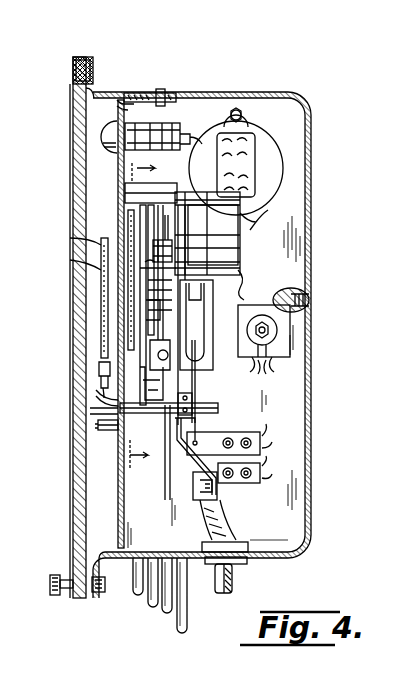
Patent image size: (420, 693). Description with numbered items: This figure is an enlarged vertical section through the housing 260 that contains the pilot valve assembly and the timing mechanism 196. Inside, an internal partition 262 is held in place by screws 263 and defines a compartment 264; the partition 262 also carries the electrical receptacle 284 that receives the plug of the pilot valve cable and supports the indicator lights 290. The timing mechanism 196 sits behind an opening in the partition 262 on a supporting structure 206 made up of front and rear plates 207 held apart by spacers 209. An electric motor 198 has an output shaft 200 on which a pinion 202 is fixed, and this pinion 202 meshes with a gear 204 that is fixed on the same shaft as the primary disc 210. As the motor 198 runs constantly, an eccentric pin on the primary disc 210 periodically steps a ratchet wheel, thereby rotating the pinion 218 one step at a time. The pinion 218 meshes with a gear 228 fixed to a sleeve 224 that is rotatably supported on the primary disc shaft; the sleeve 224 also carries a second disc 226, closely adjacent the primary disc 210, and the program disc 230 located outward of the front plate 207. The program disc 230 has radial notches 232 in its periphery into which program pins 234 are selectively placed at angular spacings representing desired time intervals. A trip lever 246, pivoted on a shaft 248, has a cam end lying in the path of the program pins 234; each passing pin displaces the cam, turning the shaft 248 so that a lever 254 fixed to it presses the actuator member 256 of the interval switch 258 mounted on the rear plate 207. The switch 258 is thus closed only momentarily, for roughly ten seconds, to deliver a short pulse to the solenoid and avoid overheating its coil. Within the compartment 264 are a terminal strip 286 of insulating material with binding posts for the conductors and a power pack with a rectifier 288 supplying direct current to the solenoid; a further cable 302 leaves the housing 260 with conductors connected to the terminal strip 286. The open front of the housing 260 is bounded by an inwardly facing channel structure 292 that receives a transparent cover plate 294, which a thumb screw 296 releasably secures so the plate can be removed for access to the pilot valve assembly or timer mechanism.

The timing mechanism 196 is at (262, 219).
The electric motor 198 is at (254, 285).
The output shaft 200 is at (160, 248).
The pinion 202 is at (164, 230).
The gear 204 is at (185, 264).
The supporting structure 206 is at (126, 186).
The front and rear plates 207 is at (128, 160).
The spacers 209 is at (177, 194).
The primary disc 210 is at (185, 250).
The pinion 218 is at (126, 285).
The sleeve 224 is at (140, 312).
The second disc 226 is at (158, 262).
The gear 228 is at (148, 340).
The program disc 230 is at (70, 238).
The radial notches 232 is at (104, 240).
The program pins 234 is at (99, 368).
The trip lever 246 is at (96, 400).
The shaft 248 is at (210, 410).
The lever 254 is at (216, 428).
The actuator member 256 is at (195, 340).
The interval switch 258 is at (204, 326).
The housing 260 is at (311, 222).
The internal partition 262 is at (116, 432).
The screws 263 is at (140, 93).
The compartment 264 is at (305, 497).
The electrical receptacle 284 is at (248, 142).
The terminal strip 286 is at (222, 496).
The rectifier 288 is at (280, 330).
The indicator lights 290 is at (105, 125).
The channel structure 292 is at (80, 57).
The transparent cover plate 294 is at (73, 441).
The thumb screw 296 is at (54, 574).
The cable 302 is at (236, 574).